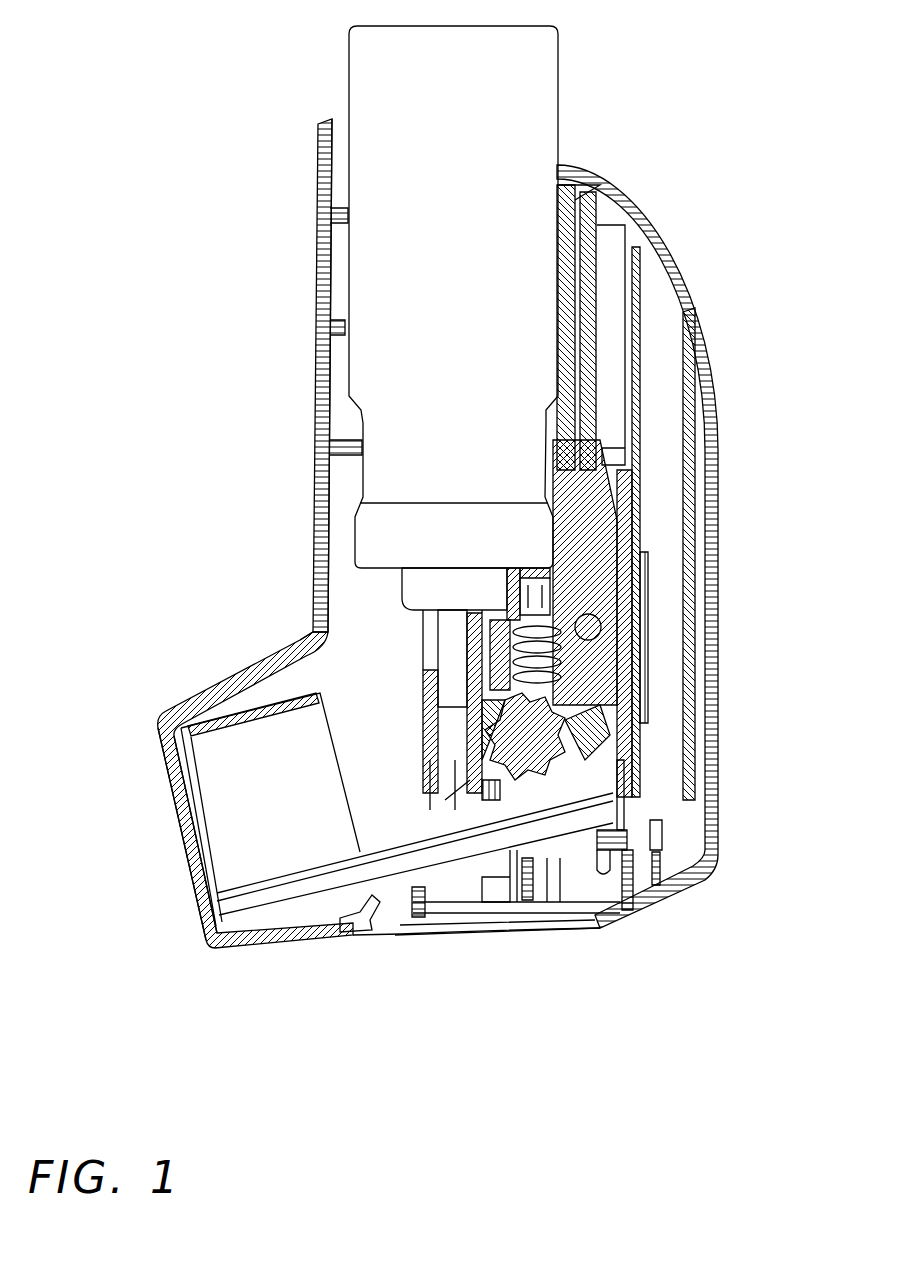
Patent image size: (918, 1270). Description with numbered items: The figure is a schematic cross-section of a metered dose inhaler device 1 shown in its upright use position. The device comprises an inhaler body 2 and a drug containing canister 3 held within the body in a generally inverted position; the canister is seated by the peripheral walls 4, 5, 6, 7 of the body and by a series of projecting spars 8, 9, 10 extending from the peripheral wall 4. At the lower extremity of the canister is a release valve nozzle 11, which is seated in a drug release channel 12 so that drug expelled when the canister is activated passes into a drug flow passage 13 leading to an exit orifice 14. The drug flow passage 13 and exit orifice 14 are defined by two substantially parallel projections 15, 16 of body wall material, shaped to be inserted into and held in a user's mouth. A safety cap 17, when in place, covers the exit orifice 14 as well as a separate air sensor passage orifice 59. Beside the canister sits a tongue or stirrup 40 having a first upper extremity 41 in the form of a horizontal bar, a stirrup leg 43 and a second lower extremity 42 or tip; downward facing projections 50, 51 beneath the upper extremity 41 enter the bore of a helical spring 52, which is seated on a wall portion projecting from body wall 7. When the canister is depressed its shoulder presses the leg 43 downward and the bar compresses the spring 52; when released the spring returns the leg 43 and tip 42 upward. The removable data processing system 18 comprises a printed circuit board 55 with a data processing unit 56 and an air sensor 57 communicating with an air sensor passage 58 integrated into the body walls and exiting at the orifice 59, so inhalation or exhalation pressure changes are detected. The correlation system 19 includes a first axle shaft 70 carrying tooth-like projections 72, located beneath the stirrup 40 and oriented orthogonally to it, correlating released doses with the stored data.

The metered dose inhaler device 1 is at (188, 42).
The inhaler body 2 is at (318, 126).
The drug containing canister 3 is at (357, 57).
The peripheral wall 4 is at (318, 398).
The peripheral wall 5 is at (625, 910).
The peripheral wall 6 is at (635, 205).
The peripheral wall 7 is at (575, 190).
The projecting spar 8 is at (342, 210).
The projecting spar 9 is at (335, 325).
The projecting spar 10 is at (326, 476).
The release valve nozzle 11 is at (443, 648).
The drug release channel 12 is at (285, 647).
The drug flow passage 13 is at (255, 780).
The exit orifice 14 is at (195, 782).
The projection of body wall material 15 is at (205, 712).
The projection of body wall material 16 is at (245, 884).
The safety cap 17 is at (185, 847).
The removable data processing system 18 is at (662, 587).
The correlation system 19 is at (477, 782).
The tongue 40 is at (503, 583).
The first upper extremity 41 is at (600, 527).
The second lower extremity 42 is at (642, 715).
The stirrup leg 43 is at (548, 655).
The downward facing projection 50 is at (600, 600).
The downward facing projection 51 is at (600, 632).
The helical spring 52 is at (510, 615).
The printed circuit board 55 is at (690, 372).
The data processing unit 56 is at (648, 560).
The air sensor 57 is at (698, 862).
The air sensor passage 58 is at (508, 835).
The air sensor passage orifice 59 is at (200, 922).
The first axle shaft 70 is at (535, 778).
The tooth-like projections 72 is at (430, 776).